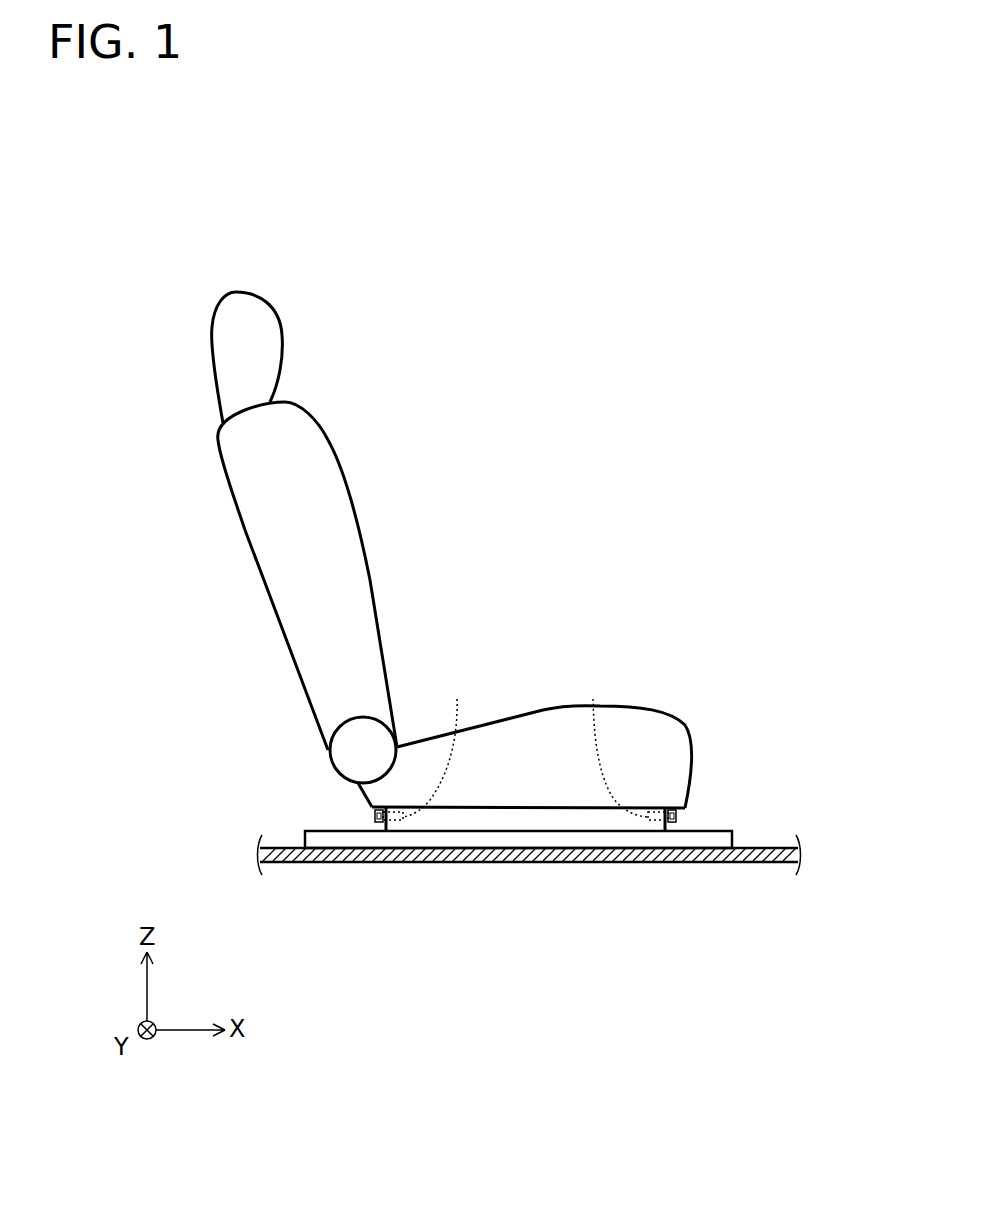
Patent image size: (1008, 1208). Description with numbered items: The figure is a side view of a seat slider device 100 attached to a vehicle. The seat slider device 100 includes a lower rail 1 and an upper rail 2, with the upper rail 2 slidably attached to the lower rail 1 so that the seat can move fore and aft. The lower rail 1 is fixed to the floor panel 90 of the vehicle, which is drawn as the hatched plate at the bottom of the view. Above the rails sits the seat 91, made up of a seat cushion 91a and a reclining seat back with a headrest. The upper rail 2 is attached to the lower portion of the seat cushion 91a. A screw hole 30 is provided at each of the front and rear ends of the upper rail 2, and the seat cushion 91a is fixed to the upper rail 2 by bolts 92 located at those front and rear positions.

The lower rail 1 is at (593, 843).
The upper rail 2 is at (473, 819).
The screw hole 30 is at (525, 746).
The floor panel 90 is at (307, 864).
The seat 91 is at (392, 488).
The seat cushion 91a is at (545, 718).
The bolt 92 is at (375, 815).
The seat slider device 100 is at (773, 815).